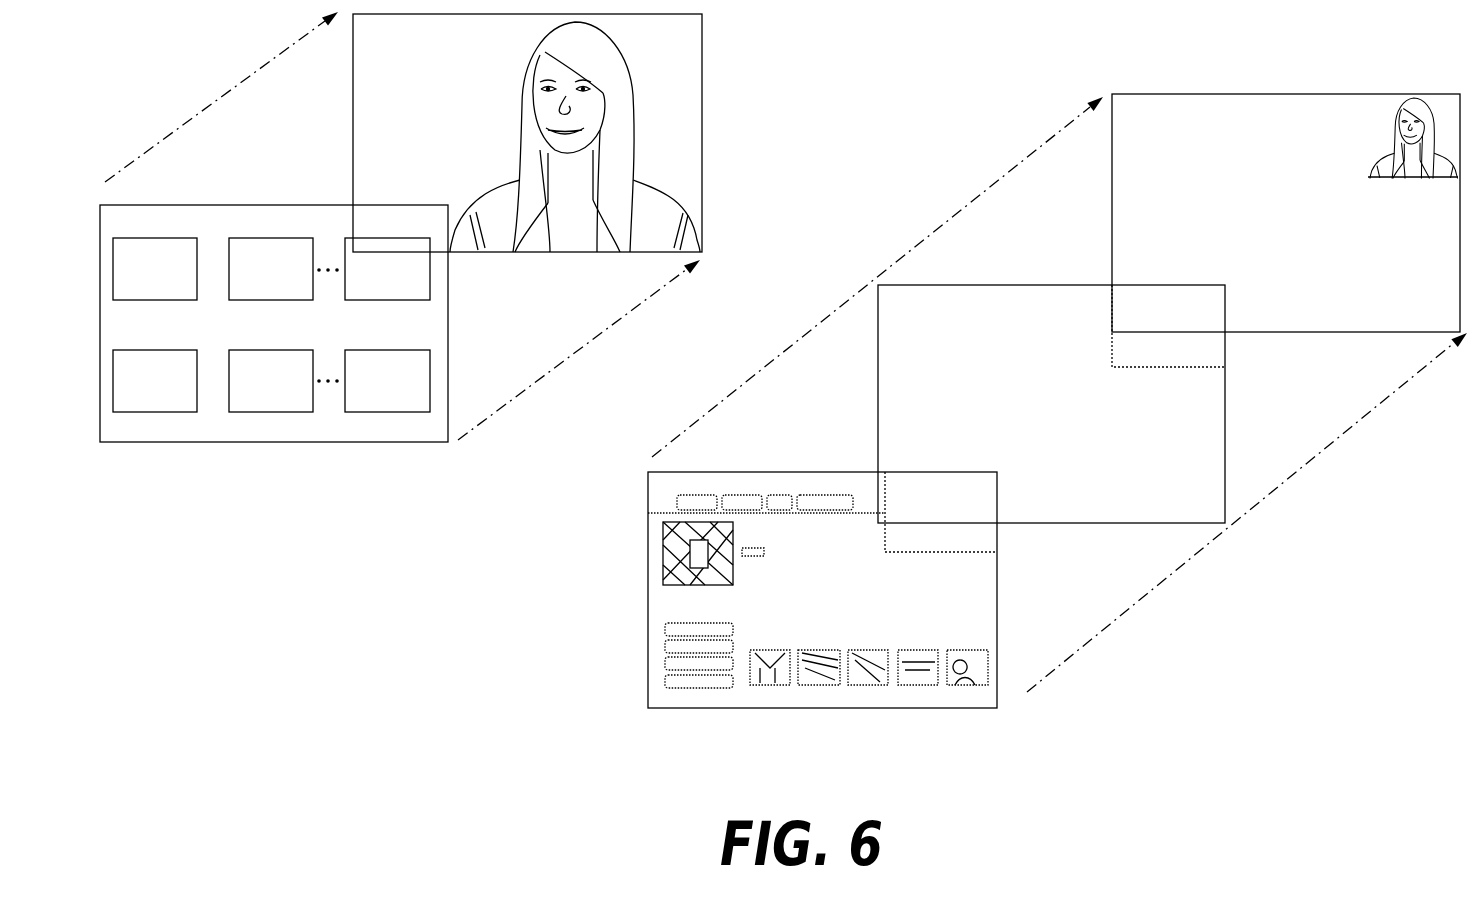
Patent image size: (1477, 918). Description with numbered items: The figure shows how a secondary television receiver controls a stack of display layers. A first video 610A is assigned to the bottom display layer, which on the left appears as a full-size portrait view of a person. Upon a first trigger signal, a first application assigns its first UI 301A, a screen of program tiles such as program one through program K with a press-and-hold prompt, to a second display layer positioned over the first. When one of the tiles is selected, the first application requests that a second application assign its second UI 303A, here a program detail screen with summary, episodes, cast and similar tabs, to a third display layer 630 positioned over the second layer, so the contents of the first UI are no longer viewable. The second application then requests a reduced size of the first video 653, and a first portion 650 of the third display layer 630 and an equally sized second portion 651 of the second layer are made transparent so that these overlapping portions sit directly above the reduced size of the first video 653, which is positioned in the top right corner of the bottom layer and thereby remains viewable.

The first video 610A is at (566, 137).
The first UI 301A is at (271, 309).
The third display layer 630 is at (780, 590).
The second UI 303A is at (818, 595).
The first portion of the third display layer 650 is at (941, 512).
The second portion of the second display layer 651 is at (1168, 326).
The reduced size of the first video 653 is at (1368, 173).